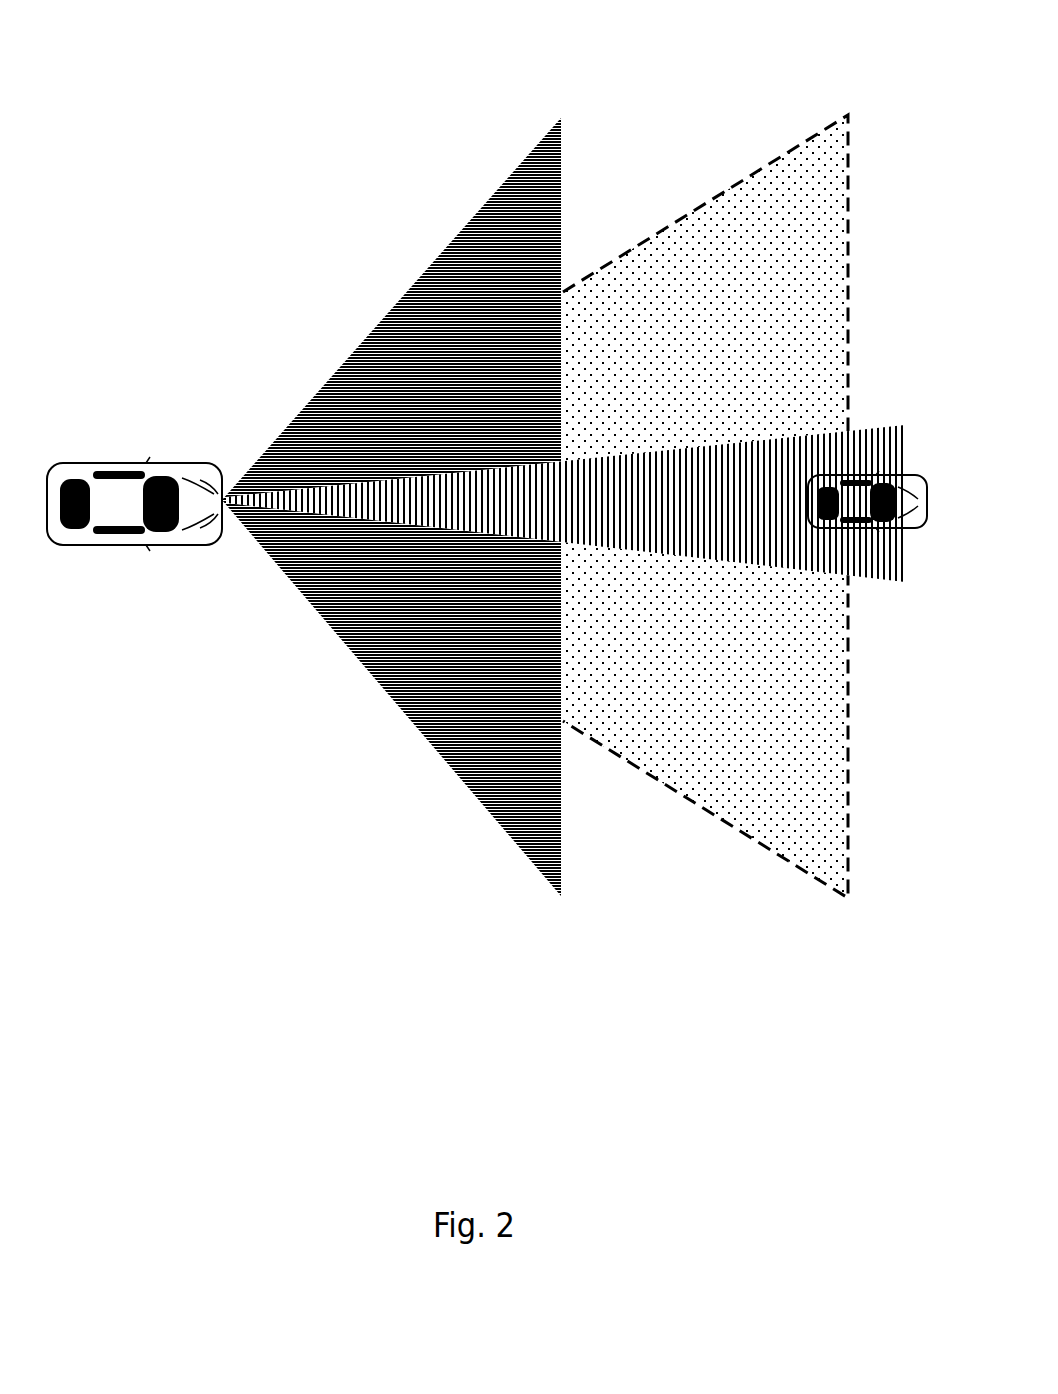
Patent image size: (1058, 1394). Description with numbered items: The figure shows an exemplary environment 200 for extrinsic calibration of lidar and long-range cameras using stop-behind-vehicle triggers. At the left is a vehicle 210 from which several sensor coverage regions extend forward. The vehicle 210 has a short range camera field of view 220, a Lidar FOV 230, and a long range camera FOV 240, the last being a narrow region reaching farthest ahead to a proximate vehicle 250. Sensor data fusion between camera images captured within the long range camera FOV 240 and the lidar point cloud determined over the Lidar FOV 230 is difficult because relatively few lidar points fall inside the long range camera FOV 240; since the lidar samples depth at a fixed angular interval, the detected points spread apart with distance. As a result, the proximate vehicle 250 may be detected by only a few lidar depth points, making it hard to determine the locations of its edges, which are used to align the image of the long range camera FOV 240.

The exemplary environment 200 is at (482, 32).
The vehicle 210 is at (188, 412).
The short range camera field of view 220 is at (418, 244).
The Lidar FOV 230 is at (681, 197).
The long range camera FOV 240 is at (886, 418).
The proximate vehicle 250 is at (912, 542).